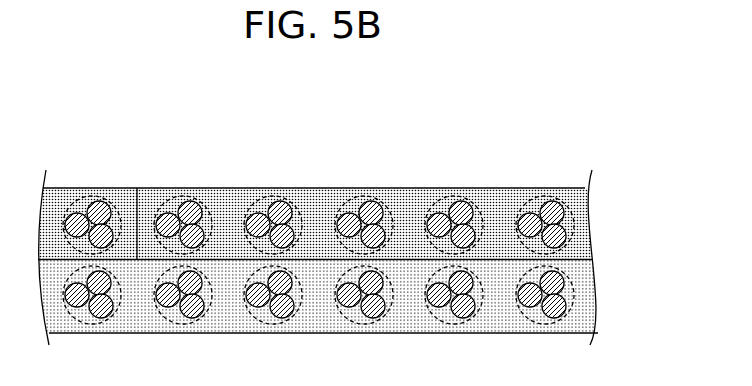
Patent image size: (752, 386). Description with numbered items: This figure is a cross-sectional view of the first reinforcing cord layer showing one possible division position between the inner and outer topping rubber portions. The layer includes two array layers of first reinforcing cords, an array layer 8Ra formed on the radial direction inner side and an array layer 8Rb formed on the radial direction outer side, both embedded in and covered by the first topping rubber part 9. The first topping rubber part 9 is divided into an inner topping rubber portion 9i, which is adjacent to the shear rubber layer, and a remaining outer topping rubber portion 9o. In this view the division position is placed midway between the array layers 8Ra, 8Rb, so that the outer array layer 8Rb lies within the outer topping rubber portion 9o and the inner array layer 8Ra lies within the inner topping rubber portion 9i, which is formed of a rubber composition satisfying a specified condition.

The first topping rubber part 9 is at (318, 190).
The outer topping rubber portion 9o is at (318, 210).
The inner topping rubber portion 9i is at (412, 286).
The array layer on radial direction outer side 8Rb is at (588, 248).
The array layer on radial direction inner side 8Ra is at (573, 316).